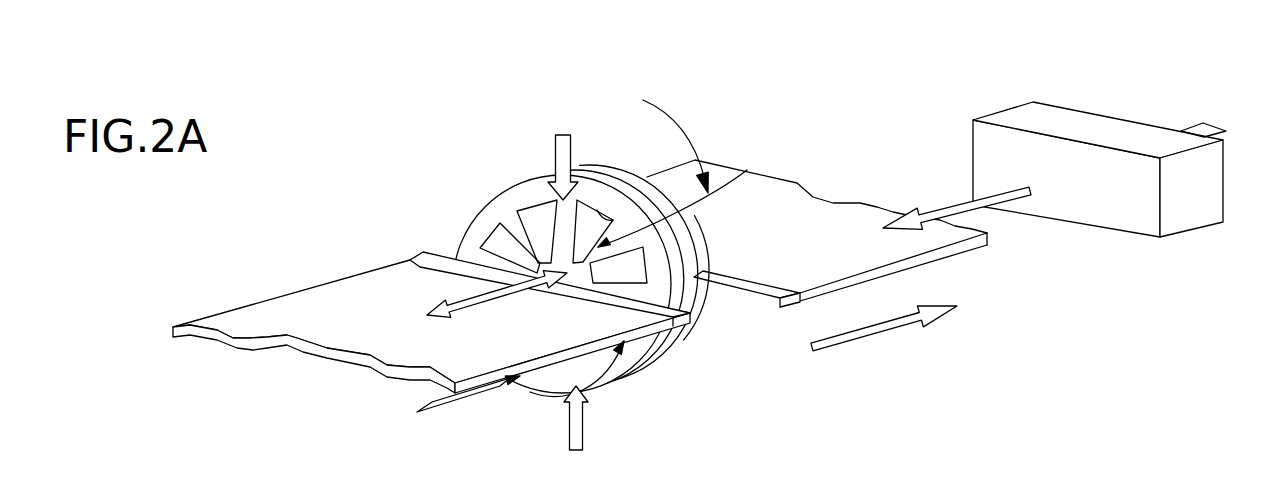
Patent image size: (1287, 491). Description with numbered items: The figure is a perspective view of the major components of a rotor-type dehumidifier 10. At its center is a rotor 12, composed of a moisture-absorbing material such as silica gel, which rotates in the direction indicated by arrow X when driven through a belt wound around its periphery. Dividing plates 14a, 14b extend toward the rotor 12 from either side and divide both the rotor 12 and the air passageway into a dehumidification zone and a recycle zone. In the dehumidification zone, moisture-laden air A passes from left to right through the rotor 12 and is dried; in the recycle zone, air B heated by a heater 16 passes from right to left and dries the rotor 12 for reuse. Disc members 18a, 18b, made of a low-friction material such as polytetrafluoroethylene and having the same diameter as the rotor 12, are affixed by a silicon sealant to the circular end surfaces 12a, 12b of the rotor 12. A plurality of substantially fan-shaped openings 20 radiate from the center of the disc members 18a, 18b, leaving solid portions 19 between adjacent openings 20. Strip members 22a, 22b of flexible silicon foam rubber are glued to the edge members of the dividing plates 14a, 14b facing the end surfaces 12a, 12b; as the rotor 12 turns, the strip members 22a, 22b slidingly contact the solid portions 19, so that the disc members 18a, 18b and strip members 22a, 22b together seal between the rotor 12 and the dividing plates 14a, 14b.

The rotor-type dehumidifier 10 is at (318, 69).
The rotor 12 is at (606, 268).
The circular end surface 12a is at (527, 193).
The circular end surface 12b is at (710, 306).
The dividing plate 14a is at (431, 281).
The dividing plate 14b is at (817, 229).
The heater 16 is at (1067, 107).
The disc member 18a is at (640, 374).
The disc member 18b is at (693, 337).
The solid portions 19 is at (747, 172).
The fan-shaped openings 20 is at (490, 238).
The strip member 22a is at (437, 262).
The strip member 22b is at (774, 306).